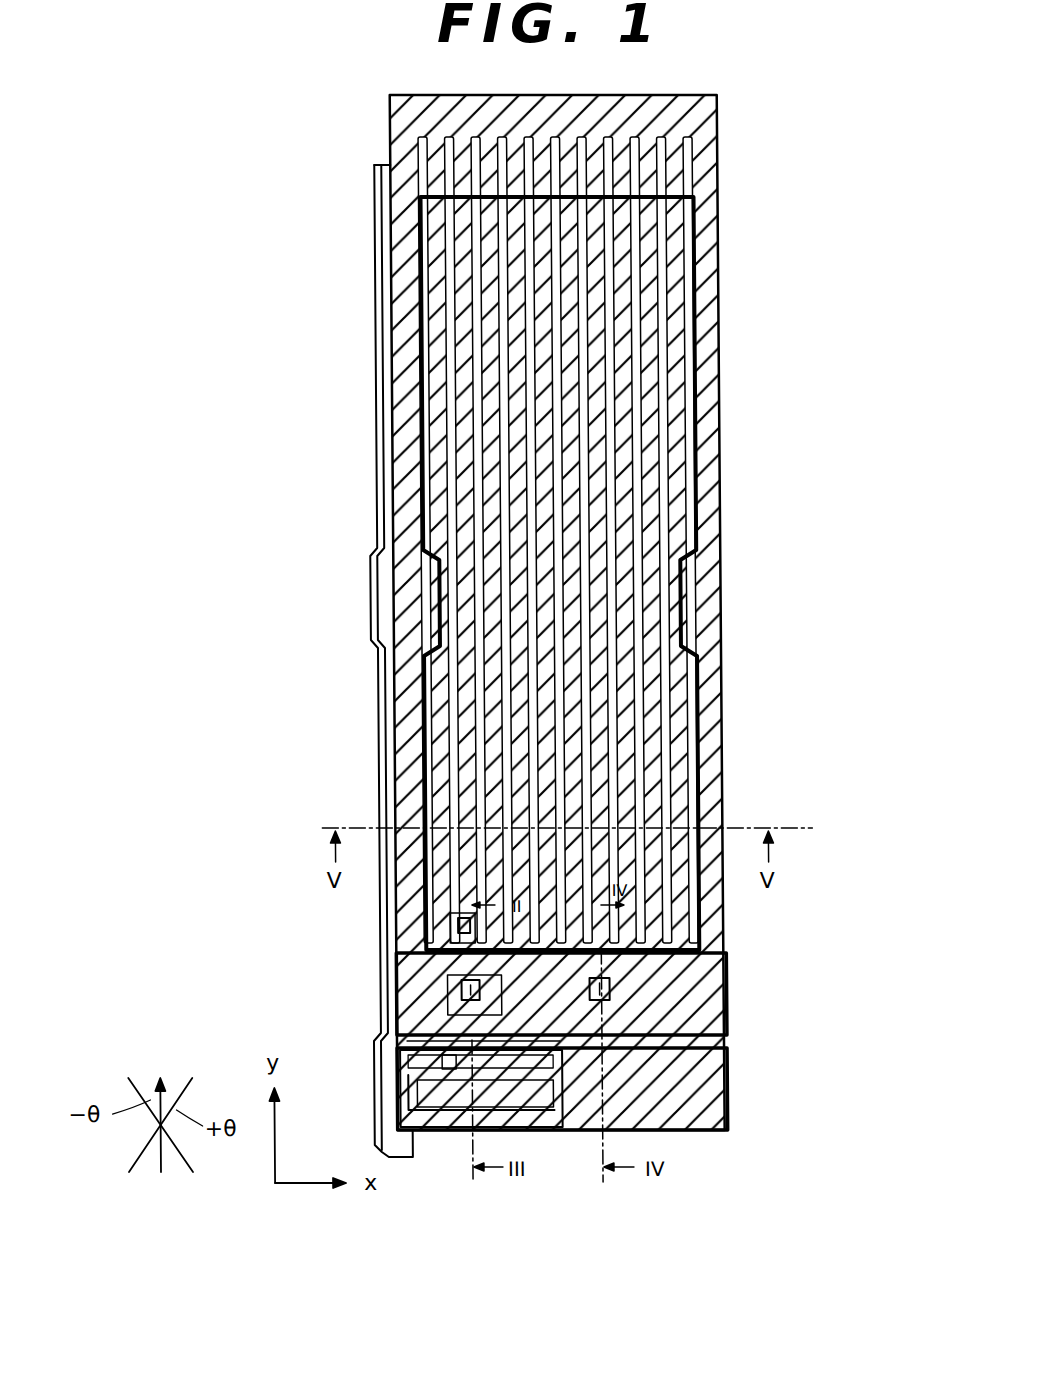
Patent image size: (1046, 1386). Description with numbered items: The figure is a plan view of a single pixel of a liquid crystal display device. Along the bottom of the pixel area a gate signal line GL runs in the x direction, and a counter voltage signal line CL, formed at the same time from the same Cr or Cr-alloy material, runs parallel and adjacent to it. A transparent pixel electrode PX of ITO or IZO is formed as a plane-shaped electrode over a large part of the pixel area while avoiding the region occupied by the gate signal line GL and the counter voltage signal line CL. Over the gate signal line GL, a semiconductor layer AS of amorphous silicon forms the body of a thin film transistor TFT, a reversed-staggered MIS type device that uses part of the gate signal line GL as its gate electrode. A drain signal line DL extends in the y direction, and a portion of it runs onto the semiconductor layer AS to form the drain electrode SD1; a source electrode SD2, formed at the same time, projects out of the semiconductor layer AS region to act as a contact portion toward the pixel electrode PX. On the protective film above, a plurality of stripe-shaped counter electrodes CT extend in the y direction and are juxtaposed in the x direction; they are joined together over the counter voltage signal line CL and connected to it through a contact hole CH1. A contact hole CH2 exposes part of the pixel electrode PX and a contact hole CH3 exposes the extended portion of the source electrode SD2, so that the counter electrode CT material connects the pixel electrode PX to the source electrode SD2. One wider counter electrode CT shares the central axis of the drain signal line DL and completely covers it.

The counter electrode CT is at (396, 156).
The pixel electrode PX is at (706, 728).
The drain signal line DL is at (379, 748).
The gate signal line GL is at (721, 1055).
The counter voltage signal line CL is at (721, 960).
The thin film transistor TFT is at (531, 1133).
The semiconductor layer AS is at (548, 1132).
The drain electrode SD1 is at (426, 1132).
The source electrode SD2 is at (440, 998).
The contact hole CH1 is at (603, 993).
The contact hole CH2 is at (445, 928).
The contact hole CH3 is at (454, 985).